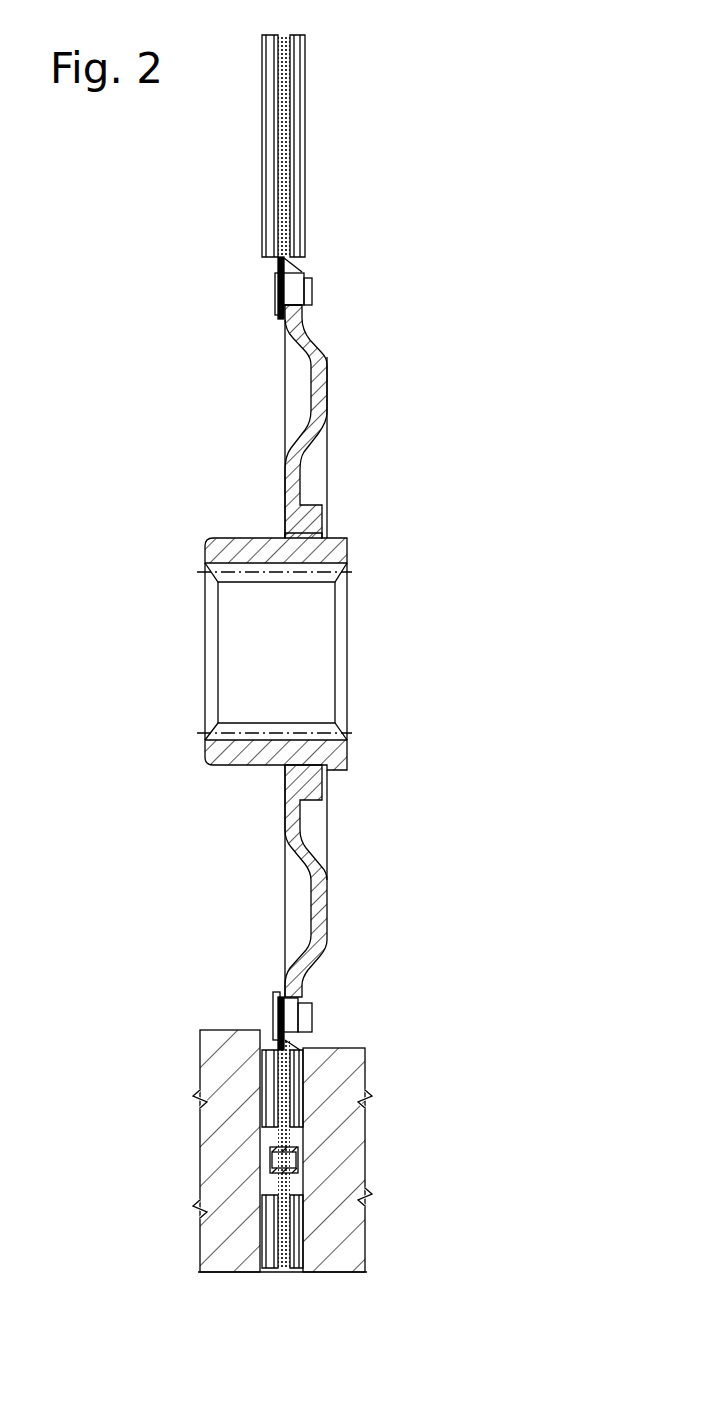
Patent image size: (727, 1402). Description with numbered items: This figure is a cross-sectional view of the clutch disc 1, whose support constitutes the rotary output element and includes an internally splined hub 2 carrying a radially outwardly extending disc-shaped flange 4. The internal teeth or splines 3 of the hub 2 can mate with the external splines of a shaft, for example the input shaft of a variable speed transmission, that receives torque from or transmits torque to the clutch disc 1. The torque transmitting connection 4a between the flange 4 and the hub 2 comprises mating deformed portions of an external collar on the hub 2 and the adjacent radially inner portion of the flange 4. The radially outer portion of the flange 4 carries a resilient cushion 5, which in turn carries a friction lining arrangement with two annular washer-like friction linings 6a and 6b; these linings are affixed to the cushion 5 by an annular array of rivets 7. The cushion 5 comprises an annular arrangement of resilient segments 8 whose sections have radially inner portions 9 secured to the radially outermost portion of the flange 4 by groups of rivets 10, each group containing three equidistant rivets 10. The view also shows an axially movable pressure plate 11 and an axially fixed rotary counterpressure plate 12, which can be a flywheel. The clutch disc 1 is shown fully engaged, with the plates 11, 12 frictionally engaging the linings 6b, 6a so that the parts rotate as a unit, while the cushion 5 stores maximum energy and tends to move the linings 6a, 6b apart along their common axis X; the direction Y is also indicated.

The clutch disc 1 is at (415, 296).
The hub 2 is at (332, 552).
The internal teeth or splines 3 is at (323, 578).
The disc-shaped flange 4 is at (322, 407).
The torque transmitting connection 4a is at (287, 785).
The resilient cushion 5 is at (281, 262).
The friction lining 6a is at (271, 70).
The friction lining 6b is at (300, 84).
The rivets 7 is at (292, 1146).
The resilient segments 8 is at (283, 1270).
The radially inner portions 9 is at (280, 318).
The rivets 10 is at (294, 287).
The pressure plate 11 is at (338, 1096).
The counterpressure plate 12 is at (222, 1082).
The common axis X is at (330, 48).
The direction Y is at (220, 1180).